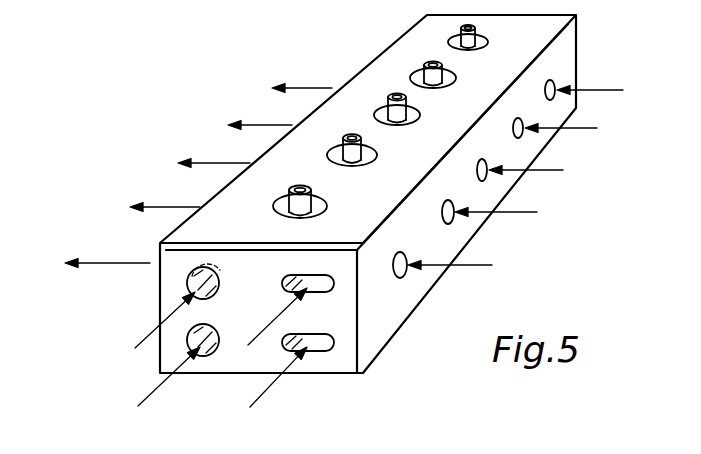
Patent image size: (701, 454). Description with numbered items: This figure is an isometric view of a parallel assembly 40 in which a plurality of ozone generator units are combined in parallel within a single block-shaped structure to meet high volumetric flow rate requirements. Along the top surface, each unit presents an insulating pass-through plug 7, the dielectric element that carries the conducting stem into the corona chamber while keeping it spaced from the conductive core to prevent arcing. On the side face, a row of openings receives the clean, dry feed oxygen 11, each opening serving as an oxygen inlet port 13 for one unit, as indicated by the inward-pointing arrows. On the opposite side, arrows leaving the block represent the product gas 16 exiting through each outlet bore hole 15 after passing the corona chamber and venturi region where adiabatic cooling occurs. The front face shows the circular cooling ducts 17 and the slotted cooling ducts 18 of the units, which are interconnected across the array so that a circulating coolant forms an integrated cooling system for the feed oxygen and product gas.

The parallel assembly 40 is at (363, 41).
The insulating pass-through plug 7 is at (313, 204).
The oxygen 11 is at (468, 293).
The oxygen inlet port 13 is at (402, 256).
The outlet bore hole 15 is at (222, 262).
The product gas 16 is at (307, 72).
The cooling ducts 17 is at (208, 298).
The cooling ducts 18 is at (308, 292).